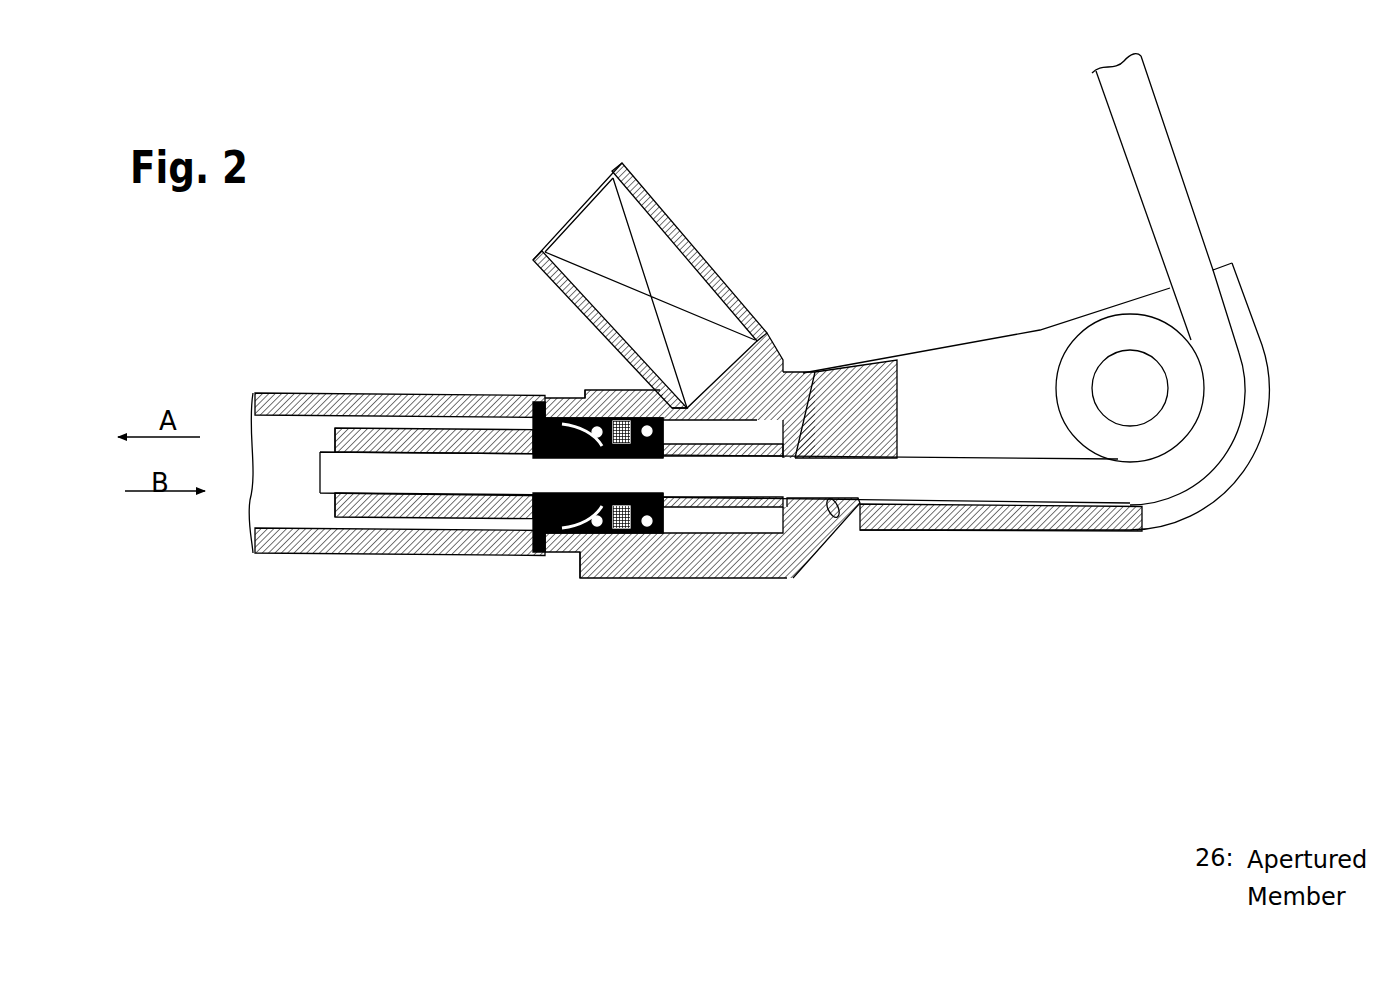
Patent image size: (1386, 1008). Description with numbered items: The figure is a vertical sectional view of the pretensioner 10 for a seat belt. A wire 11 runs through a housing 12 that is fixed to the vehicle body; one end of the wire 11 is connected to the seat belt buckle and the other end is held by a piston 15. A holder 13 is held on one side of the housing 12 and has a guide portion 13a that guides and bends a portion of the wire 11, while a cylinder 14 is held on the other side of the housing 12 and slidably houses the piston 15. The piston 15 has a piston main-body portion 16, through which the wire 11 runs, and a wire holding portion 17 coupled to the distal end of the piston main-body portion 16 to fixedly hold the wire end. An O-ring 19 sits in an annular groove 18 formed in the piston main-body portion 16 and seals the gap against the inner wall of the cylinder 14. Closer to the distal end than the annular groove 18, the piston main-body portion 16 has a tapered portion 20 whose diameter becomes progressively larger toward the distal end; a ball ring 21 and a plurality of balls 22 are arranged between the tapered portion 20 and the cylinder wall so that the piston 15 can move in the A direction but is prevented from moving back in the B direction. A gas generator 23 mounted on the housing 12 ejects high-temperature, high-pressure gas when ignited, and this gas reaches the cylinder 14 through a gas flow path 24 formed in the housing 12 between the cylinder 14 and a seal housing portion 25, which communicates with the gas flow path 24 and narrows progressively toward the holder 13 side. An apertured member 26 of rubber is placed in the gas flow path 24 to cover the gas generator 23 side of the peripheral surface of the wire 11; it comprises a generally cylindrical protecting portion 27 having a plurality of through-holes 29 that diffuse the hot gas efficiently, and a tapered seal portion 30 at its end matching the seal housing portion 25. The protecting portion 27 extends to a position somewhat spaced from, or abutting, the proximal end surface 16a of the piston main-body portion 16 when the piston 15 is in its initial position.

The pretensioner 10 is at (412, 238).
The wire 11 is at (382, 476).
The housing 12 is at (860, 380).
The holder 13 is at (1240, 318).
The guide portion 13a is at (1110, 326).
The cylinder 14 is at (300, 404).
The piston 15 is at (468, 524).
The piston main-body portion 16 is at (563, 548).
The proximal end surface 16a is at (672, 522).
The wire holding portion 17 is at (356, 519).
The annular groove 18 is at (642, 530).
The O-ring 19 is at (620, 530).
The tapered portion 20 is at (572, 403).
The ball ring 21 is at (597, 527).
The balls 22 is at (585, 394).
The gas generator 23 is at (590, 236).
The gas flow path 24 is at (727, 522).
The seal housing portion 25 is at (856, 504).
The apertured member 26 is at (815, 520).
The protecting portion 27 is at (747, 578).
The through-holes 29 is at (746, 360).
The seal portion 30 is at (812, 386).